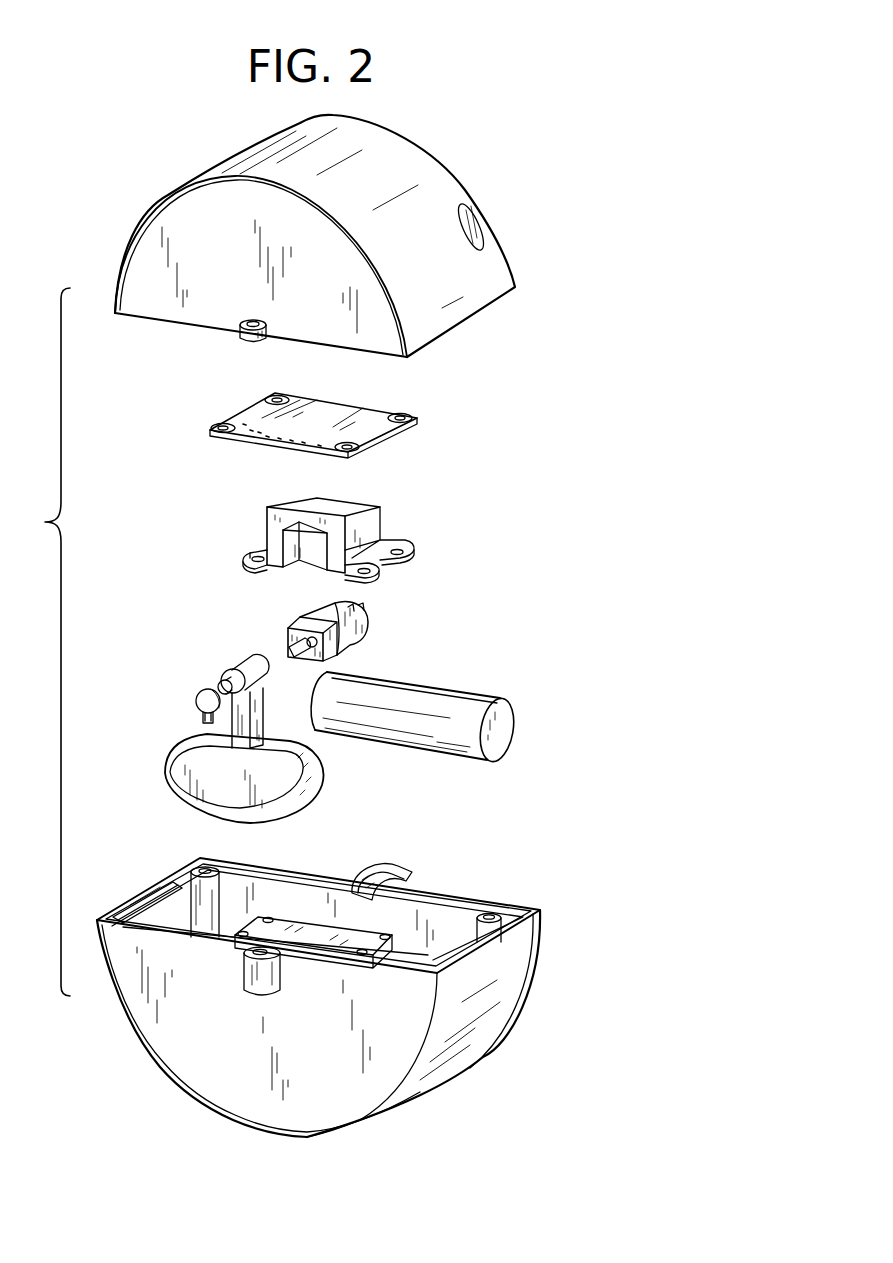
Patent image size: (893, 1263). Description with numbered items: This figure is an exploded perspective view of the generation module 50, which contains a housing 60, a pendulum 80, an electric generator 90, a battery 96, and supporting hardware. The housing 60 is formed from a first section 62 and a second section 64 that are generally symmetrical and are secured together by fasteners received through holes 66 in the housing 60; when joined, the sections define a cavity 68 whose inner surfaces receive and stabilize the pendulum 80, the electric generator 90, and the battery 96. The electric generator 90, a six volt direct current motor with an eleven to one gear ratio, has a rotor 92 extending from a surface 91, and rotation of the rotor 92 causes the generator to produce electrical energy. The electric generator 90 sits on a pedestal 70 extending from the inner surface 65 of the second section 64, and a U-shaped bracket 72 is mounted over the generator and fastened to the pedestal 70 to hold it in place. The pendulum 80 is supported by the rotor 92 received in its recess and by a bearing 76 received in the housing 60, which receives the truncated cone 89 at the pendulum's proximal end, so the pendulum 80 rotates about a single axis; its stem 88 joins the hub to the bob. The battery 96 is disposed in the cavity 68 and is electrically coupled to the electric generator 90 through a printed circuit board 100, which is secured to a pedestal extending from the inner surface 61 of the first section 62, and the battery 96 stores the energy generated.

The generation module 50 is at (503, 456).
The housing 60 is at (43, 642).
The inner surface of first section 61 is at (428, 347).
The first section 62 is at (128, 297).
The second section 64 is at (130, 983).
The inner surface of second section 65 is at (162, 917).
The holes 66 is at (243, 318).
The cavity 68 is at (457, 920).
The pedestal 70 is at (363, 937).
The U-shaped bracket 72 is at (370, 525).
The bearing 76 is at (198, 706).
The pendulum 80 is at (275, 690).
The stem 88 is at (262, 712).
The truncated cone 89 is at (220, 684).
The electric generator 90 is at (352, 648).
The surface of electric generator 91 is at (315, 632).
The rotor 92 is at (291, 641).
The battery 96 is at (458, 700).
The printed circuit board 100 is at (248, 413).